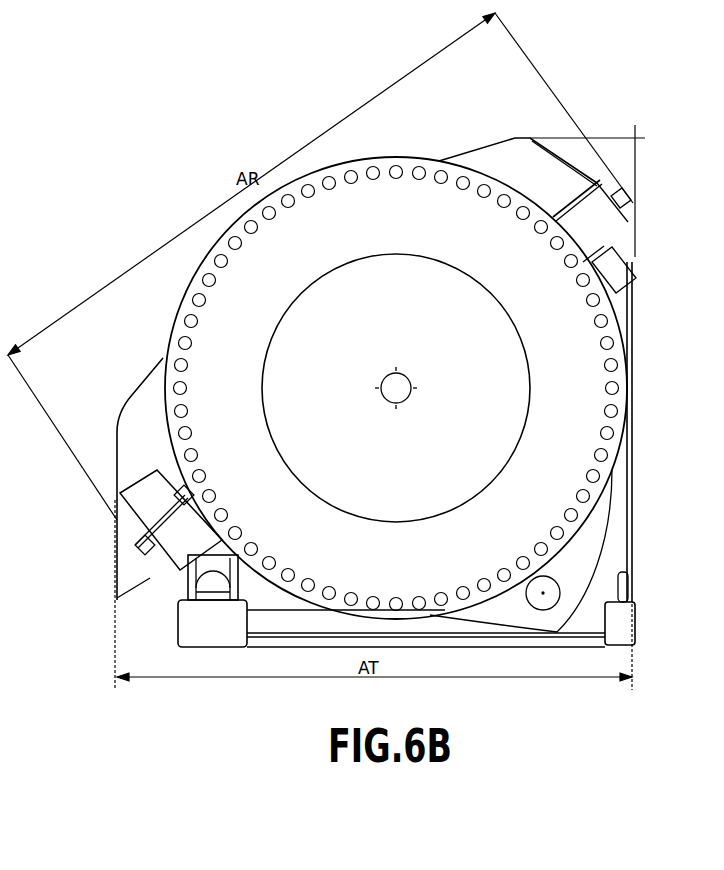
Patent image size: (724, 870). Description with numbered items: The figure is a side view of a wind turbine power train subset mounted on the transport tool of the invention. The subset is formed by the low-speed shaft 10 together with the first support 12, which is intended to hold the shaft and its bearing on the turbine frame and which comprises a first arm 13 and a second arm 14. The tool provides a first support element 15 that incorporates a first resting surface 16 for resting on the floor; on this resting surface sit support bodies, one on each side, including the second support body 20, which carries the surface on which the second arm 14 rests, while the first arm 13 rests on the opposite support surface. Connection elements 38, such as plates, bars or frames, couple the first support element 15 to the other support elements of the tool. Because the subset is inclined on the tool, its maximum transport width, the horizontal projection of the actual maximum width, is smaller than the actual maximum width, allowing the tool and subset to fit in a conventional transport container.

The low-speed shaft 10 is at (473, 417).
The first support 12 is at (479, 138).
The first arm 13 is at (597, 238).
The second arm 14 is at (165, 548).
The first support element 15 is at (638, 642).
The first resting surface 16 is at (292, 617).
The second support body 20 is at (190, 578).
The connection elements 38 is at (178, 622).